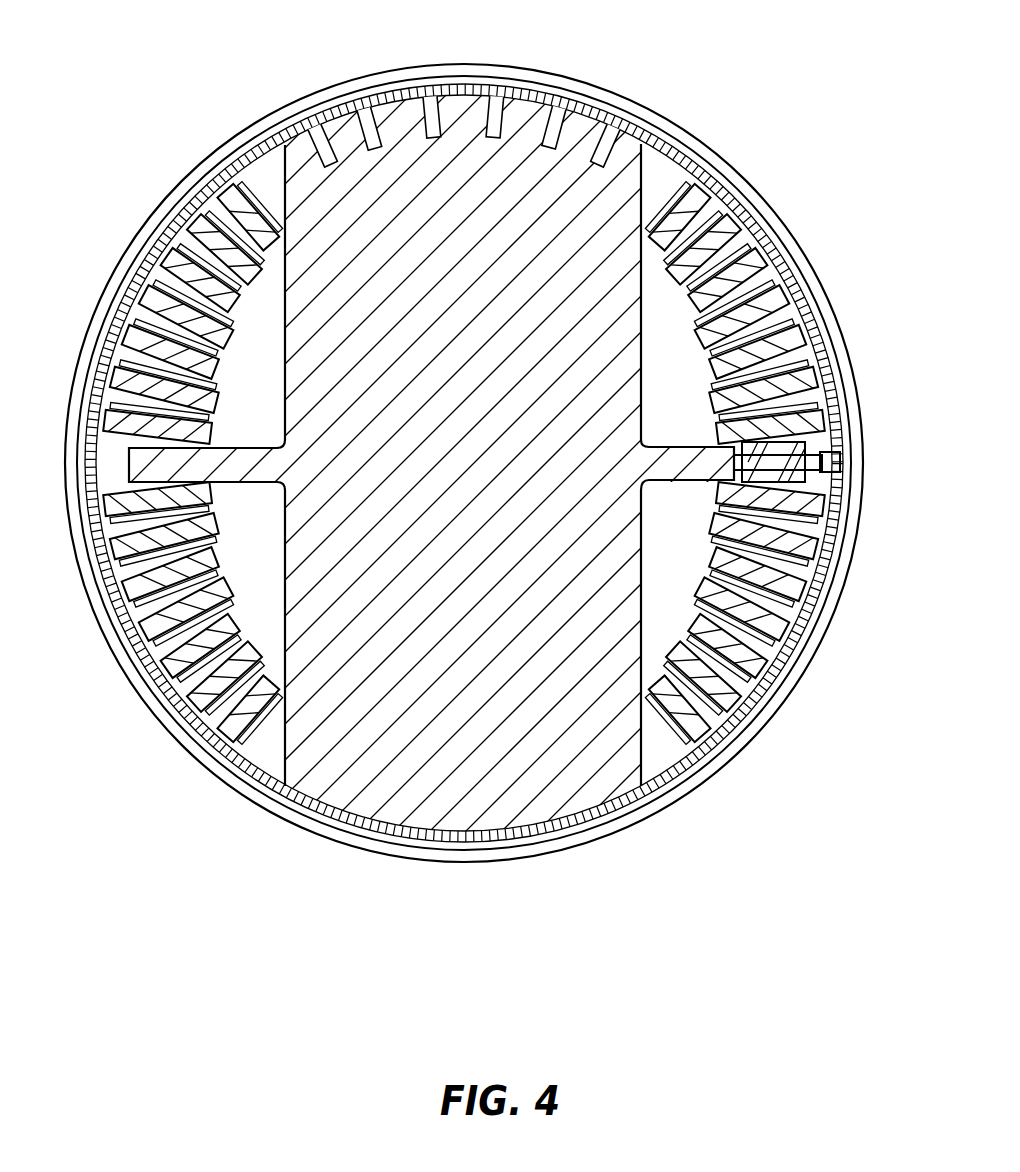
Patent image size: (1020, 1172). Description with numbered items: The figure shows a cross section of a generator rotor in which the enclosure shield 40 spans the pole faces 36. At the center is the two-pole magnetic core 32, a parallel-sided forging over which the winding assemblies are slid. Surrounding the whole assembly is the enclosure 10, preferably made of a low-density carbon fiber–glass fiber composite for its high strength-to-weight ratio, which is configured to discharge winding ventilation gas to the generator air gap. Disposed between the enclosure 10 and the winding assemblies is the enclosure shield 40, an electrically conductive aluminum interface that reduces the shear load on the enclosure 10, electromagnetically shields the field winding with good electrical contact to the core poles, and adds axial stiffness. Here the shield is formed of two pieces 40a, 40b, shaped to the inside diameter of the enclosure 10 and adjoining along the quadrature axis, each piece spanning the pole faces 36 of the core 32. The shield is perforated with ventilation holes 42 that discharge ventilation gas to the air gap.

The enclosure 10 is at (835, 578).
The magnetic core 32 is at (613, 217).
The pole faces 36 is at (590, 64).
The enclosure shield 40 is at (787, 277).
The shield piece 40a is at (147, 262).
The shield piece 40b is at (770, 713).
The ventilation holes 42 is at (355, 97).